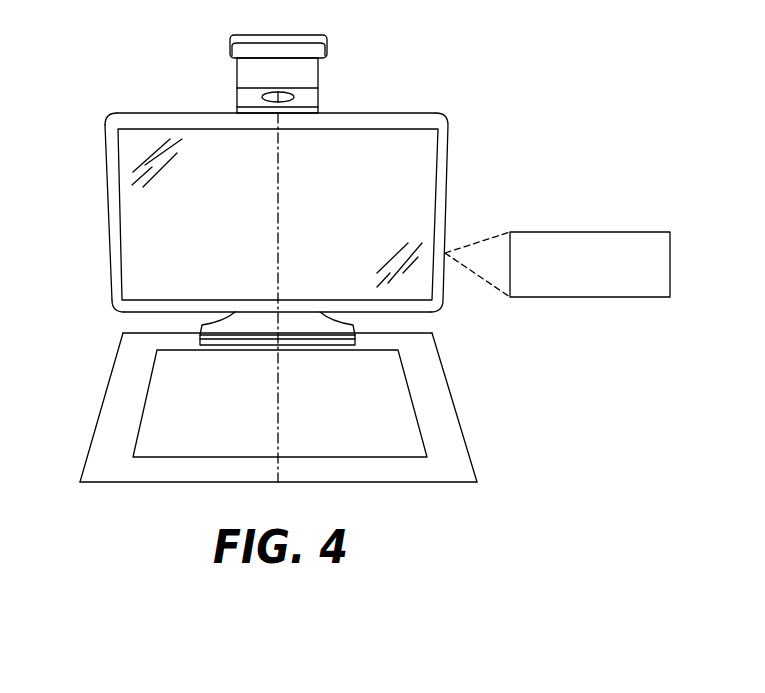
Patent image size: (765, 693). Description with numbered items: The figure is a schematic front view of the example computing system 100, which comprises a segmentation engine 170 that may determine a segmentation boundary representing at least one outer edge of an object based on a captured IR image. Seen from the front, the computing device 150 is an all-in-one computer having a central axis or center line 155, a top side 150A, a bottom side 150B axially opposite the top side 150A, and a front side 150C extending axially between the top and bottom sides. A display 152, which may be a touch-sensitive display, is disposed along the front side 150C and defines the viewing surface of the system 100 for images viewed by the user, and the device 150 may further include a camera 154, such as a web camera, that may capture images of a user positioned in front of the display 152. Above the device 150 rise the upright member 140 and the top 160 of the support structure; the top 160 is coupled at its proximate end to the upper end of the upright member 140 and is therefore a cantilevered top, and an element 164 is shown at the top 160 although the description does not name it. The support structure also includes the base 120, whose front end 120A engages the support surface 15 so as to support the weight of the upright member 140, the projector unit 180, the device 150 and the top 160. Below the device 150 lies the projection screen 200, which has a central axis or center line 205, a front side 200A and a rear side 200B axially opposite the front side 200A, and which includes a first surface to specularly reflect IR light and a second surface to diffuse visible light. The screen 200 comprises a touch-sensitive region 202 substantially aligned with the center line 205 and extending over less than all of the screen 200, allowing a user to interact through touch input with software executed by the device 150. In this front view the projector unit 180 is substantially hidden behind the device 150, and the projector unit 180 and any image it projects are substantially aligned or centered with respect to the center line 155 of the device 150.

The support surface 15 is at (607, 417).
The computing system 100 is at (567, 138).
The base 120 is at (190, 333).
The front end of base 120A is at (225, 350).
The upright member 140 is at (233, 74).
The computing device 150 is at (456, 192).
The top side of computing device 150A is at (365, 113).
The bottom side of computing device 150B is at (395, 312).
The front side of computing device 150C is at (124, 212).
The display 152 is at (352, 183).
The camera 154 is at (280, 117).
The center line of computing device 155 is at (272, 155).
The top 160 is at (330, 31).
The sensor bundle 164 is at (268, 43).
The segmentation engine 170 is at (593, 297).
The projector unit 180 is at (233, 106).
The projection screen 200 is at (433, 437).
The front side of projection screen 200A is at (387, 483).
The rear side of projection screen 200B is at (150, 334).
The touch-sensitive region 202 is at (402, 398).
The center line of projection screen 205 is at (280, 365).